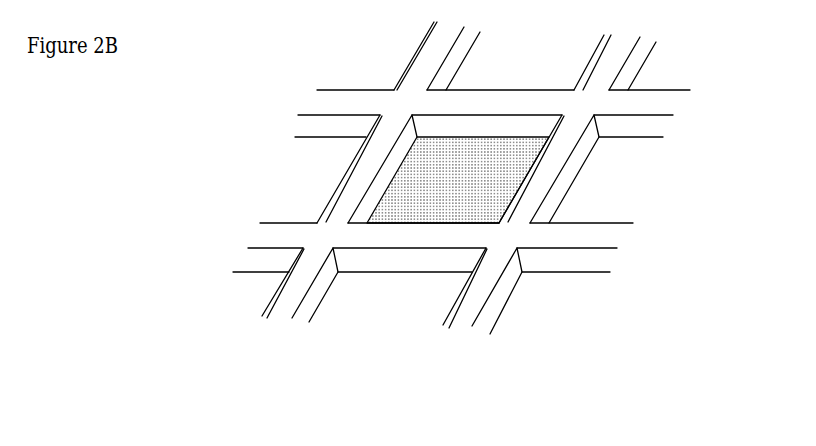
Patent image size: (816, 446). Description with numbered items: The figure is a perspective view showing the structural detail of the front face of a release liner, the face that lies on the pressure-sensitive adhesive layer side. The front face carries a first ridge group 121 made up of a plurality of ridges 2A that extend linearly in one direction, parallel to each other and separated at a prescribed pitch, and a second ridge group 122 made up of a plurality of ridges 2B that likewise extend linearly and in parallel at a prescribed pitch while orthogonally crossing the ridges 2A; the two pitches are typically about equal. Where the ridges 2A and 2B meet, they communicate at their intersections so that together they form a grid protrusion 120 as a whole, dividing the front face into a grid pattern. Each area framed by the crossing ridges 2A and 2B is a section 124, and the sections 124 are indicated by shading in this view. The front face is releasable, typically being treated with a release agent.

The grid protrusion 120 is at (411, 96).
The first ridge group 121 is at (387, 367).
The second ridge group 122 is at (702, 135).
The section 124 is at (458, 180).
The ridge 2A is at (363, 182).
The ridge 2B is at (482, 94).